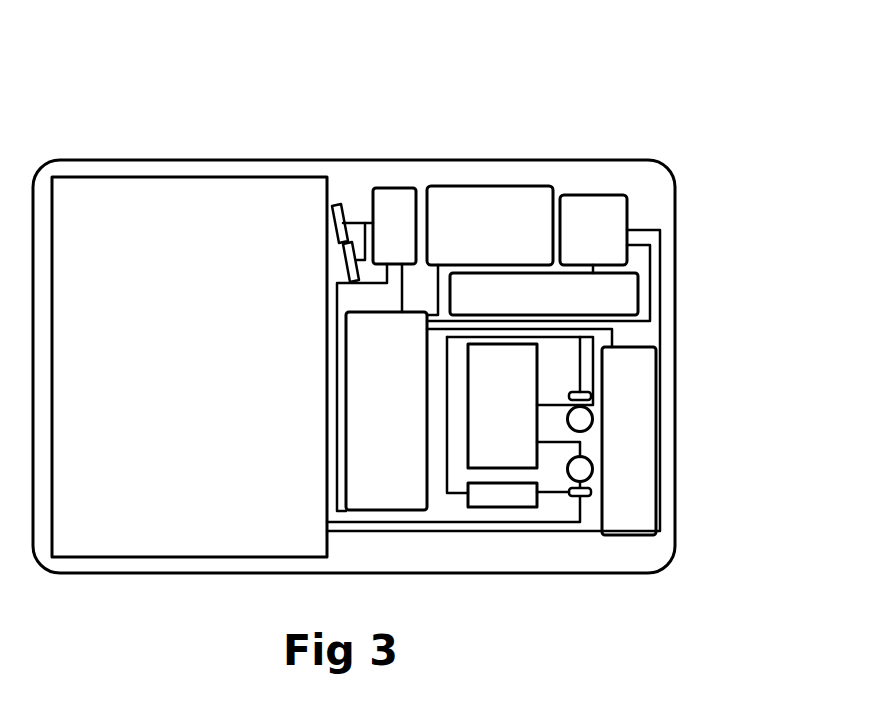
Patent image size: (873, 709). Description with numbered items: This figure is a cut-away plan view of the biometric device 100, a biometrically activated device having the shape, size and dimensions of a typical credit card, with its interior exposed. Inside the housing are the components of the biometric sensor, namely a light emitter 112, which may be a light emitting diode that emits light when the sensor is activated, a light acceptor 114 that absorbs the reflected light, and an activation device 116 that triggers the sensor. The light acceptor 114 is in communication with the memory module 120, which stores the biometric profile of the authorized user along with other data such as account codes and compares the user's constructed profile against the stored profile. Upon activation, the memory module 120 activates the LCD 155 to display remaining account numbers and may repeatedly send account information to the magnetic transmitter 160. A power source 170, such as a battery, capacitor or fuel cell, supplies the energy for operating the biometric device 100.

The biometric device 100 is at (340, 160).
The light emitter 112 is at (595, 420).
The light acceptor 114 is at (595, 470).
The activation device 116 is at (567, 396).
The memory module 120 is at (492, 200).
The liquid crystal display (LCD) 155 is at (640, 290).
The magnetic transmitter 160 is at (345, 213).
The power source 170 is at (147, 200).